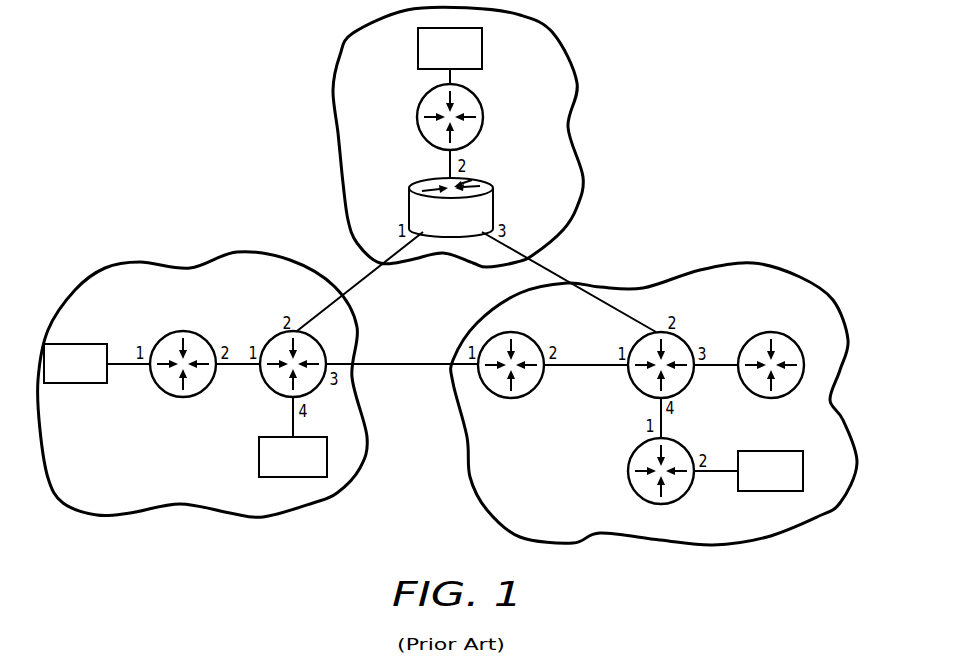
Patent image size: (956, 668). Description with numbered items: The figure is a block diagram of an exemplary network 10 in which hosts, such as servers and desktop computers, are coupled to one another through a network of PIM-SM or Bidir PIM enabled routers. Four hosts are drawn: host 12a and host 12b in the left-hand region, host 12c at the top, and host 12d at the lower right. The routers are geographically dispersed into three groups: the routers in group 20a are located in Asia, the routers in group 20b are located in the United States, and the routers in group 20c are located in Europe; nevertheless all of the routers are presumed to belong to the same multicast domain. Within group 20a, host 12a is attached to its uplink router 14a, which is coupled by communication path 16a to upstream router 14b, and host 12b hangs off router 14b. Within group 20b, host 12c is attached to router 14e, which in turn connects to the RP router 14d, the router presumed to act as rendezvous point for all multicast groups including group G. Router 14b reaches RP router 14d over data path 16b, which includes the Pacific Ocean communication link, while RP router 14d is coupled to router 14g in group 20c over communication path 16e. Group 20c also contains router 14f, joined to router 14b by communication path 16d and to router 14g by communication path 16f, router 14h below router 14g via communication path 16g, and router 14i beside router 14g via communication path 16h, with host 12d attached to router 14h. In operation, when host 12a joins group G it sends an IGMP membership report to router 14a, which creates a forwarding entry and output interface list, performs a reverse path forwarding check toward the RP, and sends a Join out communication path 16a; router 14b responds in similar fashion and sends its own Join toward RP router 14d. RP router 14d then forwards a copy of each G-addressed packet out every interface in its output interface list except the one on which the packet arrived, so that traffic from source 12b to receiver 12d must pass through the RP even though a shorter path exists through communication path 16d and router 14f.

The network 10 is at (745, 72).
The host 12a is at (70, 343).
The host 12b is at (260, 445).
The host 12c is at (417, 43).
The host 12d is at (773, 492).
The router 14a is at (183, 332).
The router 14b is at (268, 387).
The RP router 14d is at (495, 212).
The router 14e is at (480, 95).
The router 14f is at (505, 398).
The router 14g is at (628, 380).
The router 14h is at (630, 487).
The router 14i is at (768, 333).
The communication path 16a is at (240, 363).
The communication path 16b is at (368, 272).
The communication path 16d is at (387, 367).
The communication path 16e is at (553, 272).
The communication path 16f is at (590, 363).
The communication path 16g is at (657, 405).
The communication path 16h is at (713, 367).
The group 20a is at (143, 260).
The group 20b is at (568, 125).
The group 20c is at (753, 263).